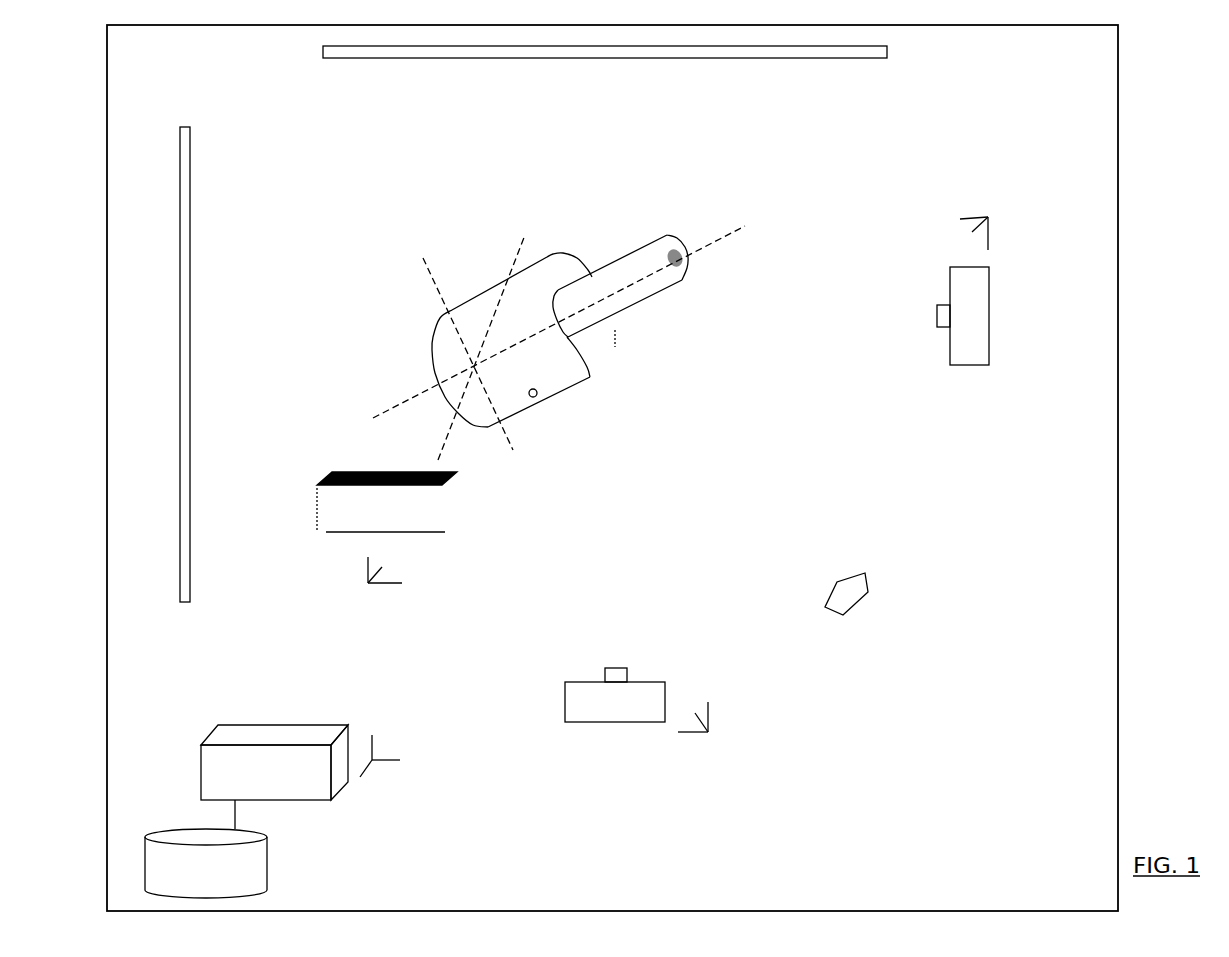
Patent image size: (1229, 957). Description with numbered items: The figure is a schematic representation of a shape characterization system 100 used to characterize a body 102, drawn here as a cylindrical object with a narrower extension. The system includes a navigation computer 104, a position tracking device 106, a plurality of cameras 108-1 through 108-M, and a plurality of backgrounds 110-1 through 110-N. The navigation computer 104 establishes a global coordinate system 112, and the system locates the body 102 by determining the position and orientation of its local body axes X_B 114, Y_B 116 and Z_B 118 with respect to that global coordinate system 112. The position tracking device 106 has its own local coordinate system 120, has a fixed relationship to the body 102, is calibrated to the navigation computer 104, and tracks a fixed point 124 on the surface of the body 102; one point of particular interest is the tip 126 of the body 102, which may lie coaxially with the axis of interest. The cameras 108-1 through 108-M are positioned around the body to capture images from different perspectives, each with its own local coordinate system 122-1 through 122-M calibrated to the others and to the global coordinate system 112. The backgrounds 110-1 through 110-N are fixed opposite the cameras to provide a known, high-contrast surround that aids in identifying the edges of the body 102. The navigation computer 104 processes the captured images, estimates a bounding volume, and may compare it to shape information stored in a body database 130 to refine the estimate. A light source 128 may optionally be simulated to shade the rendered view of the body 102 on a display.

The shape characterization system 100 is at (106, 593).
The body 102 is at (643, 243).
The navigation computer 104 is at (312, 800).
The position tracking device 106 is at (315, 532).
The camera 108-1 is at (582, 725).
The camera 108-M is at (990, 365).
The background 110-1 is at (192, 577).
The background 110-N is at (377, 60).
The global coordinate system 112 is at (402, 782).
The body axis X_B 114 is at (745, 223).
The body axis Y_B 116 is at (423, 277).
The body axis Z_B 118 is at (513, 238).
The local coordinate system of position tracking device 120 is at (382, 592).
The camera local coordinate system 122-1 is at (710, 742).
The camera local coordinate system 122-M is at (988, 217).
The fixed point 124 is at (540, 398).
The tip 126 is at (682, 272).
The light source 128 is at (869, 582).
The body database 130 is at (267, 847).